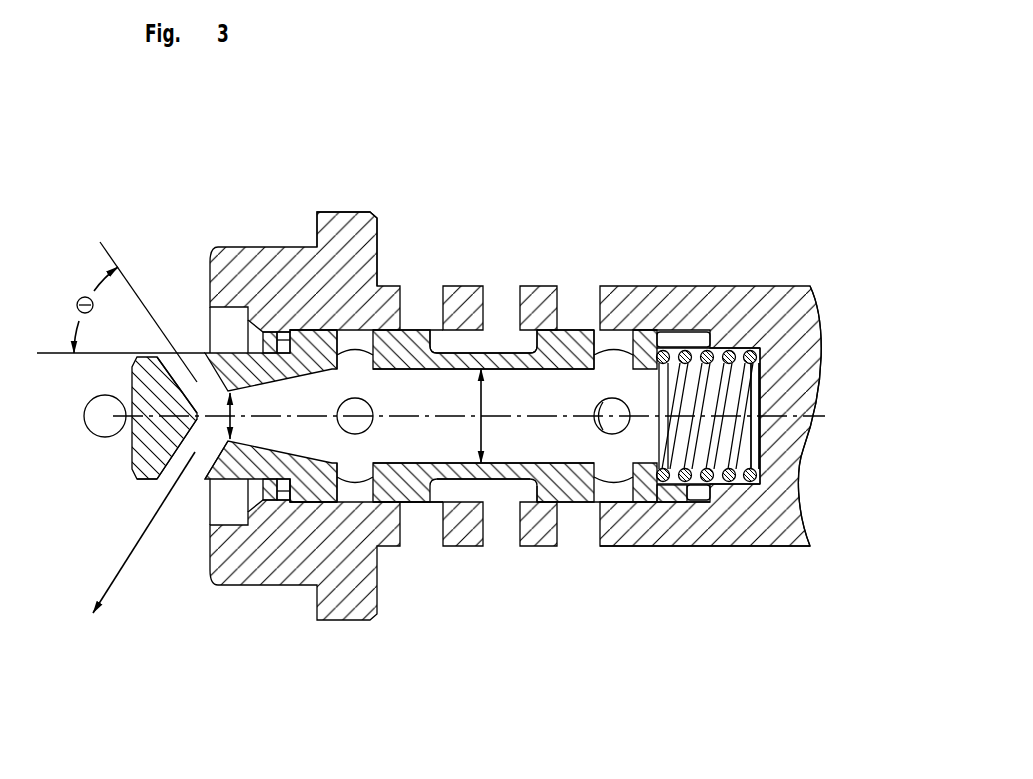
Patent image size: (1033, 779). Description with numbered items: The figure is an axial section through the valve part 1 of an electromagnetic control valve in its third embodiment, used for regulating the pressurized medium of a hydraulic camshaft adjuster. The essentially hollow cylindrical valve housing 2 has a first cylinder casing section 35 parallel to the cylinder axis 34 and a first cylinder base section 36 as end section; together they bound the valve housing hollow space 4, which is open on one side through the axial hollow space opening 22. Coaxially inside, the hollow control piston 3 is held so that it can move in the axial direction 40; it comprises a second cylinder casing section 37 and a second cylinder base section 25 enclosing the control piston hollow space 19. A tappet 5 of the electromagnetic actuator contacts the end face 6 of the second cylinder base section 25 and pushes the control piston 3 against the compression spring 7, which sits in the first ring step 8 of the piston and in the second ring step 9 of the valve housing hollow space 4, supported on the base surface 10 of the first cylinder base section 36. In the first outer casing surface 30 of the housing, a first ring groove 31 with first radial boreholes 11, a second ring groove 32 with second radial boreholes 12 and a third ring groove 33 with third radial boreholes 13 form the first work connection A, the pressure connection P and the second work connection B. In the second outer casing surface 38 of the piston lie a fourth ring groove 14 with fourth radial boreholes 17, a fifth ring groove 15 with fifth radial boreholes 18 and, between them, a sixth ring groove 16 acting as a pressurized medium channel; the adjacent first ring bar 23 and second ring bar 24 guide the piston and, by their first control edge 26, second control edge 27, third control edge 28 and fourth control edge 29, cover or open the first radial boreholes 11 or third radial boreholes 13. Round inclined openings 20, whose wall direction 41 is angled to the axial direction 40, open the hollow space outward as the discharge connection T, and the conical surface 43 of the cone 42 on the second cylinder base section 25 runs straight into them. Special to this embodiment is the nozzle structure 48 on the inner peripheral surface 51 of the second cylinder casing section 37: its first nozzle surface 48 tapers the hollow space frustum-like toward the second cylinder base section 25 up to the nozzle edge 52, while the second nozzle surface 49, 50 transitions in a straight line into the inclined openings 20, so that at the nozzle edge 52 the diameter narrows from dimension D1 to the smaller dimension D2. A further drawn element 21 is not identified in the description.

The valve part 1 is at (592, 95).
The valve housing 2 is at (775, 286).
The control piston 3 is at (567, 506).
The valve housing hollow space 4 is at (678, 350).
The tappet 5 is at (93, 414).
The end face 6 is at (132, 388).
The compression spring 7 is at (732, 345).
The first ring step 8 is at (667, 330).
The second ring step 9 is at (720, 482).
The base surface 10 is at (755, 441).
The first radial boreholes 11 is at (550, 318).
The second radial boreholes 12 is at (487, 330).
The third radial boreholes 13 is at (393, 320).
The fourth ring groove 14 is at (623, 333).
The fifth ring groove 15 is at (345, 315).
The sixth ring groove 16 is at (453, 317).
The fourth radial boreholes 17 is at (600, 330).
The fifth radial boreholes 18 is at (357, 300).
The control piston hollow space 19 is at (400, 407).
The inclined openings 20 is at (195, 470).
The upper housing block 21 is at (226, 320).
The axial hollow space opening 22 is at (203, 318).
The first ring bar 23 is at (567, 317).
The second ring bar 24 is at (440, 320).
The second cylinder base section 25 is at (147, 443).
The first control edge 26 is at (590, 530).
The second control edge 27 is at (547, 530).
The third control edge 28 is at (425, 490).
The fourth control edge 29 is at (362, 490).
The first outer casing surface 30 is at (763, 546).
The first ring groove 31 is at (560, 535).
The second ring groove 32 is at (480, 525).
The third ring groove 33 is at (400, 535).
The cylinder axis 34 is at (517, 417).
The first cylinder casing section 35 is at (680, 530).
The first cylinder base section 36 is at (772, 500).
The second cylinder casing section 37 is at (330, 490).
The second outer casing surface 38 is at (308, 503).
The axial direction 40 is at (50, 353).
The wall direction 41 is at (112, 250).
The cone 42 is at (137, 478).
The conical surface 43 is at (180, 477).
The nozzle structure 48 is at (277, 365).
The second nozzle surface 49 is at (310, 461).
The second nozzle surface 50 is at (241, 322).
The inner peripheral surface 51 is at (553, 369).
The nozzle edge 52 is at (147, 468).
The first work connection A is at (578, 203).
The second work connection B is at (420, 268).
The pressure connection P is at (503, 268).
The discharge connection T is at (139, 549).
The dimension D1 is at (465, 416).
The dimension D2 is at (276, 416).